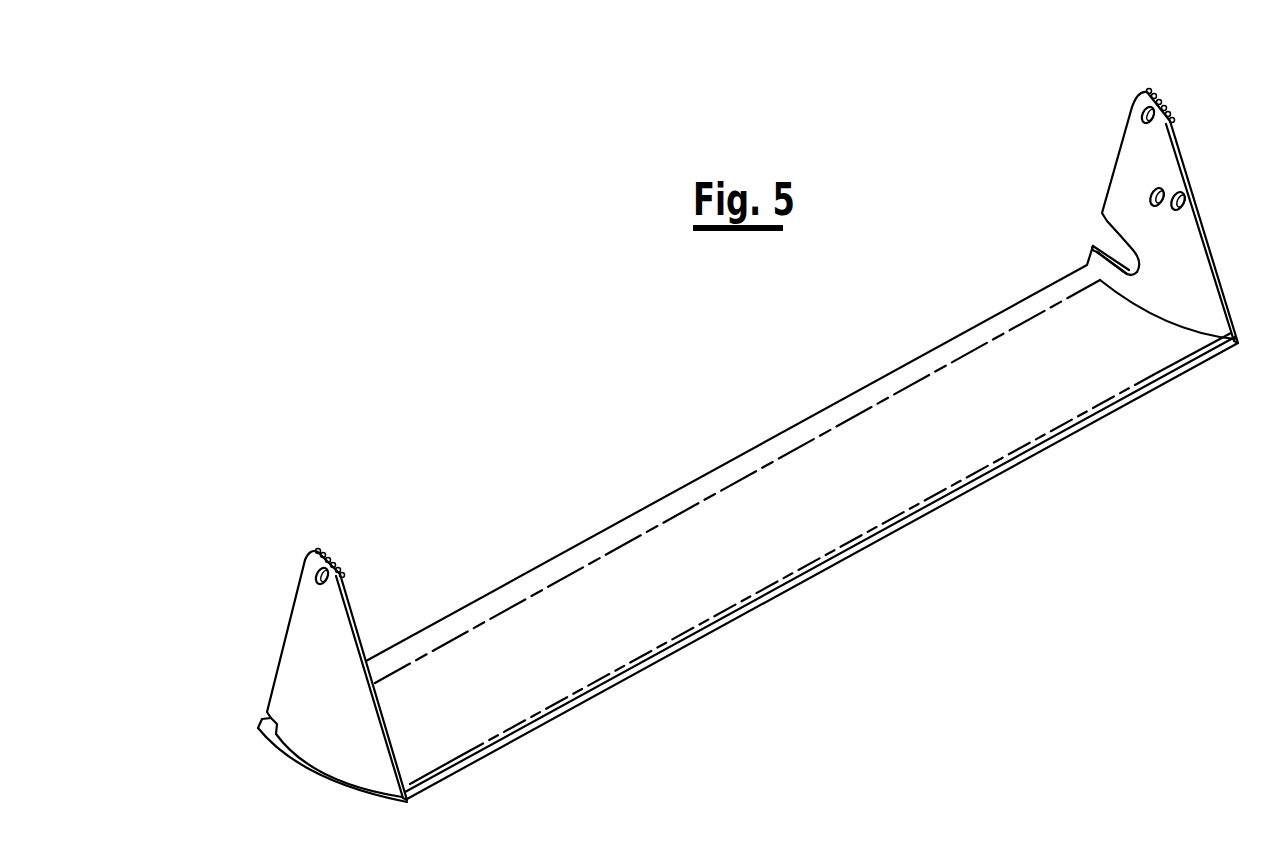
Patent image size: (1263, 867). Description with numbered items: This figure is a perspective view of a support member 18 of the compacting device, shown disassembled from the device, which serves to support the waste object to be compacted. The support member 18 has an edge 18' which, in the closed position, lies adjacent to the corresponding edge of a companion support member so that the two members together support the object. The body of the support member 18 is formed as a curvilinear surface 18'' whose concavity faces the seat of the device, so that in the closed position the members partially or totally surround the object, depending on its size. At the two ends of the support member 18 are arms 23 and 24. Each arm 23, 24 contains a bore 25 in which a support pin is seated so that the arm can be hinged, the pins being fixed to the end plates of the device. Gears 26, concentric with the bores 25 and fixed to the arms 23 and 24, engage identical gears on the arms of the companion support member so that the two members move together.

The support member 18 is at (746, 541).
The edge 18' is at (747, 453).
The curvilinear surface 18'' is at (821, 566).
The arm 23 is at (292, 652).
The arm 24 is at (1118, 192).
The bore 25 is at (313, 572).
The gear 26 is at (338, 563).